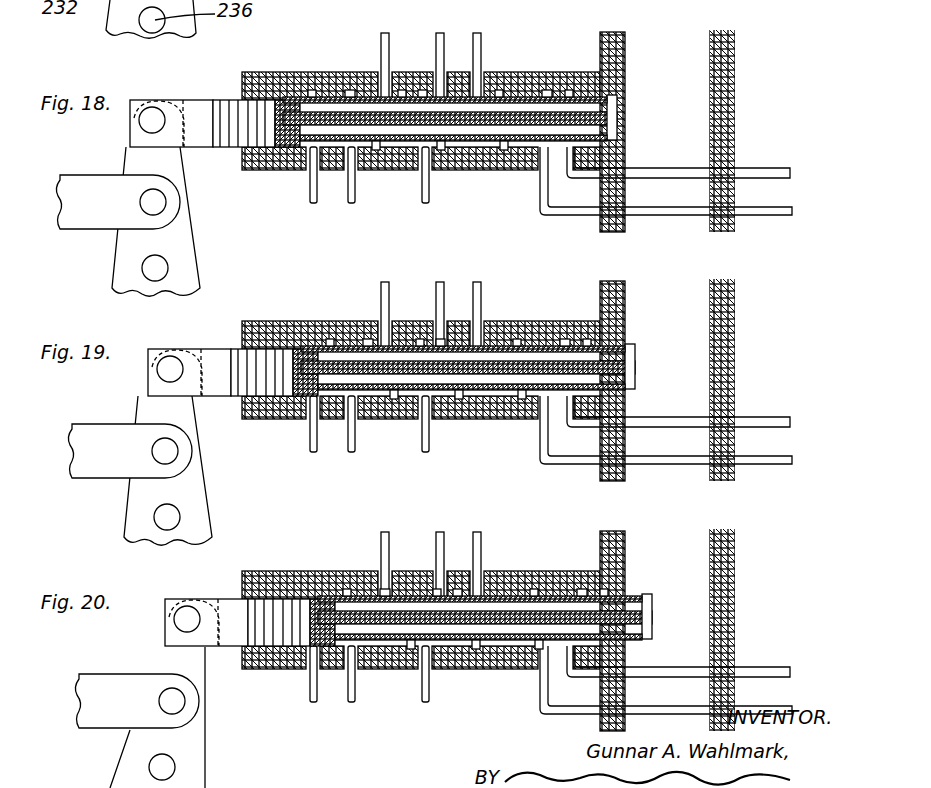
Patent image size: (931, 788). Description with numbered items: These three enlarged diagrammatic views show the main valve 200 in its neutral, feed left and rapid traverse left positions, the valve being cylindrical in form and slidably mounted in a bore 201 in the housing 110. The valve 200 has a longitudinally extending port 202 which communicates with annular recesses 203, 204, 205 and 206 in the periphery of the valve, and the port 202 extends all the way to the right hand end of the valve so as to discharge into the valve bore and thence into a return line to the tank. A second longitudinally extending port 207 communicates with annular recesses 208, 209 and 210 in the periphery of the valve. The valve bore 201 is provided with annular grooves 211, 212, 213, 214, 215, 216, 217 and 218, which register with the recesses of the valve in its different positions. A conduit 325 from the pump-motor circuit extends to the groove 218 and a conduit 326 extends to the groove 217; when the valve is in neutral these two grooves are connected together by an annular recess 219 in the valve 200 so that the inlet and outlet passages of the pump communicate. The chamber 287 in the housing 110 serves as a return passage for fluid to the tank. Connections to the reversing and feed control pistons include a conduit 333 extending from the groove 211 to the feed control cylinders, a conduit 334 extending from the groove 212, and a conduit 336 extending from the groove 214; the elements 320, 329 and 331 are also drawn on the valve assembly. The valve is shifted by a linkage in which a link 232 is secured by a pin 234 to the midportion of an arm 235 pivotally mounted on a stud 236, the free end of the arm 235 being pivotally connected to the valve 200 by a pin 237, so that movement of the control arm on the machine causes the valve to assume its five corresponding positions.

In FIG. 18, the housing 110 is at (715, 72).
In FIG. 19, the housing 110 is at (754, 380).
In FIG. 20, the housing 110 is at (754, 630).
In FIG. 18, the main valve 200 is at (188, 100).
In FIG. 19, the main valve 200 is at (220, 353).
In FIG. 20, the main valve 200 is at (237, 607).
In FIG. 18, the valve bore 201 is at (530, 150).
In FIG. 19, the valve bore 201 is at (563, 381).
In FIG. 20, the valve bore 201 is at (587, 631).
In FIG. 18, the longitudinally extending port 202 is at (612, 112).
In FIG. 19, the longitudinally extending port 202 is at (489, 368).
In FIG. 20, the longitudinally extending port 202 is at (504, 619).
In FIG. 18, the annular recess 203 is at (309, 95).
In FIG. 19, the annular recess 203 is at (310, 324).
In FIG. 20, the annular recess 203 is at (310, 572).
In FIG. 18, the annular recess 204 is at (352, 95).
In FIG. 19, the annular recess 204 is at (383, 325).
In FIG. 20, the annular recess 204 is at (385, 562).
In FIG. 18, the annular recess 205 is at (421, 95).
In FIG. 19, the annular recess 205 is at (467, 303).
In FIG. 20, the annular recess 205 is at (467, 554).
In FIG. 18, the annular recess 206 is at (520, 95).
In FIG. 19, the annular recess 206 is at (542, 323).
In FIG. 20, the annular recess 206 is at (542, 570).
In FIG. 18, the longitudinally extending port 207 is at (585, 128).
In FIG. 19, the longitudinally extending port 207 is at (502, 380).
In FIG. 20, the longitudinally extending port 207 is at (516, 630).
In FIG. 18, the annular recess 208 is at (308, 152).
In FIG. 19, the annular recess 208 is at (298, 436).
In FIG. 20, the annular recess 208 is at (300, 685).
In FIG. 18, the annular recess 209 is at (373, 152).
In FIG. 19, the annular recess 209 is at (369, 420).
In FIG. 20, the annular recess 209 is at (369, 671).
In FIG. 18, the annular recess 210 is at (472, 152).
In FIG. 19, the annular recess 210 is at (485, 420).
In FIG. 20, the annular recess 210 is at (485, 670).
In FIG. 18, the annular groove 211 is at (313, 90).
In FIG. 19, the annular groove 211 is at (314, 312).
In FIG. 20, the annular groove 211 is at (319, 561).
In FIG. 18, the annular groove 212 is at (351, 90).
In FIG. 19, the annular groove 212 is at (358, 312).
In FIG. 20, the annular groove 212 is at (385, 592).
In FIG. 18, the annular groove 213 is at (402, 90).
In FIG. 19, the annular groove 213 is at (413, 312).
In FIG. 20, the annular groove 213 is at (419, 561).
In FIG. 18, the annular groove 214 is at (425, 178).
In FIG. 19, the annular groove 214 is at (403, 428).
In FIG. 20, the annular groove 214 is at (396, 678).
In FIG. 18, the annular groove 215 is at (428, 92).
In FIG. 19, the annular groove 215 is at (424, 321).
In FIG. 20, the annular groove 215 is at (432, 570).
In FIG. 18, the annular groove 216 is at (498, 90).
In FIG. 19, the annular groove 216 is at (516, 312).
In FIG. 20, the annular groove 216 is at (517, 561).
In FIG. 18, the annular groove 217 is at (547, 90).
In FIG. 19, the annular groove 217 is at (565, 312).
In FIG. 20, the annular groove 217 is at (572, 553).
In FIG. 18, the annular groove 218 is at (569, 90).
In FIG. 19, the annular groove 218 is at (578, 321).
In FIG. 20, the annular groove 218 is at (586, 568).
In FIG. 18, the annular recess 219 is at (607, 97).
In FIG. 19, the annular recess 219 is at (492, 334).
In FIG. 20, the annular recess 219 is at (498, 578).
In FIG. 18, the link 232 is at (90, 220).
In FIG. 19, the link 232 is at (121, 470).
In FIG. 20, the link 232 is at (124, 721).
In FIG. 18, the pin 234 is at (157, 202).
In FIG. 19, the pin 234 is at (203, 455).
In FIG. 20, the pin 234 is at (212, 702).
In FIG. 18, the arm 235 is at (186, 238).
In FIG. 19, the arm 235 is at (189, 470).
In FIG. 20, the arm 235 is at (185, 717).
In FIG. 18, the stud 236 is at (158, 268).
In FIG. 19, the stud 236 is at (204, 517).
In FIG. 20, the stud 236 is at (205, 771).
In FIG. 18, the pin 237 is at (150, 122).
In FIG. 19, the pin 237 is at (136, 372).
In FIG. 20, the pin 237 is at (153, 622).
In FIG. 18, the chamber 287 is at (700, 135).
In FIG. 19, the chamber 287 is at (755, 365).
In FIG. 20, the chamber 287 is at (755, 623).
In FIG. 18, the valve pin 320 is at (385, 33).
In FIG. 19, the valve pin 320 is at (393, 300).
In FIG. 20, the valve pin 320 is at (392, 552).
In FIG. 18, the conduit 325 is at (771, 168).
In FIG. 19, the conduit 325 is at (689, 405).
In FIG. 20, the conduit 325 is at (689, 653).
In FIG. 18, the conduit 326 is at (772, 218).
In FIG. 19, the conduit 326 is at (675, 447).
In FIG. 20, the conduit 326 is at (676, 680).
In FIG. 18, the valve pin 329 is at (440, 33).
In FIG. 19, the valve pin 329 is at (436, 294).
In FIG. 20, the valve pin 329 is at (440, 544).
In FIG. 18, the valve pin 331 is at (479, 33).
In FIG. 19, the valve pin 331 is at (504, 300).
In FIG. 20, the valve pin 331 is at (504, 551).
In FIG. 18, the conduit 333 is at (312, 200).
In FIG. 19, the conduit 333 is at (291, 425).
In FIG. 20, the conduit 333 is at (292, 674).
In FIG. 18, the conduit 334 is at (352, 200).
In FIG. 19, the conduit 334 is at (369, 444).
In FIG. 20, the conduit 334 is at (375, 696).
In FIG. 18, the conduit 336 is at (430, 200).
In FIG. 19, the conduit 336 is at (451, 431).
In FIG. 20, the conduit 336 is at (451, 681).